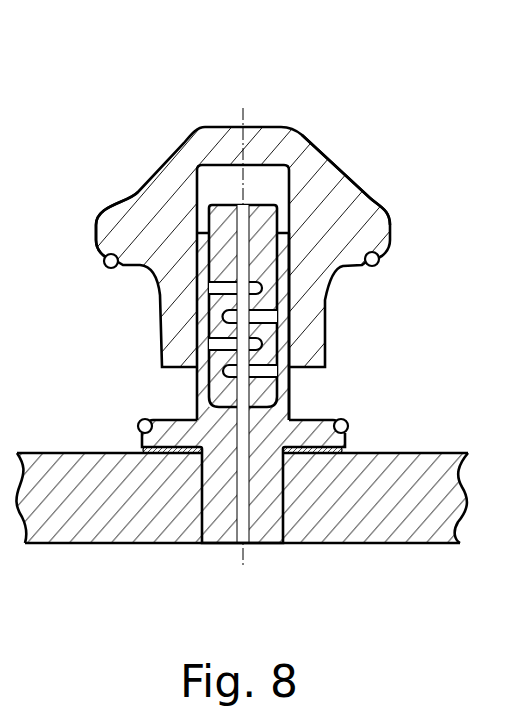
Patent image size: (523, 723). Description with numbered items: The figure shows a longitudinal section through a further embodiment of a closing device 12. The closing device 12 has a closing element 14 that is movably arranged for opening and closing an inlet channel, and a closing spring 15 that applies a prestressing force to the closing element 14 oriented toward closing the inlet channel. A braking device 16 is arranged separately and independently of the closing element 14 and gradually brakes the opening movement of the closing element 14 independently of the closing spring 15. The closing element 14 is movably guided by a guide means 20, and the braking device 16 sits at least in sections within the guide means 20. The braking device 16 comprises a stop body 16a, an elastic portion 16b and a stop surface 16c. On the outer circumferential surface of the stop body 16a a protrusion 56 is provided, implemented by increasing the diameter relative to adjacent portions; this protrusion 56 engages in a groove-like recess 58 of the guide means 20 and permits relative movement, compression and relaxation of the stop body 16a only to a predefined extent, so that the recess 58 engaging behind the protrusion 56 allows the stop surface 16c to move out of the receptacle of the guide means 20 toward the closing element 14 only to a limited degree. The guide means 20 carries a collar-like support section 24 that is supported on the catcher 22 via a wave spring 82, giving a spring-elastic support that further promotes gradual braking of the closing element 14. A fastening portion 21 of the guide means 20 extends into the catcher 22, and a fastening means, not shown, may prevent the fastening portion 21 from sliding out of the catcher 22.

The closing device 12 is at (242, 332).
The closing element 14 is at (110, 230).
The closing spring 15 is at (383, 260).
The braking device 16 is at (267, 174).
The stop body 16a is at (265, 213).
The elastic portion 16b is at (218, 323).
The stop surface 16c is at (227, 194).
The guide means 20 is at (283, 340).
The fastening portion 21 is at (272, 530).
The catcher 22 is at (377, 530).
The support section 24 is at (320, 422).
The protrusion 56 is at (292, 258).
The recess 58 is at (198, 268).
The wave spring 82 is at (332, 461).